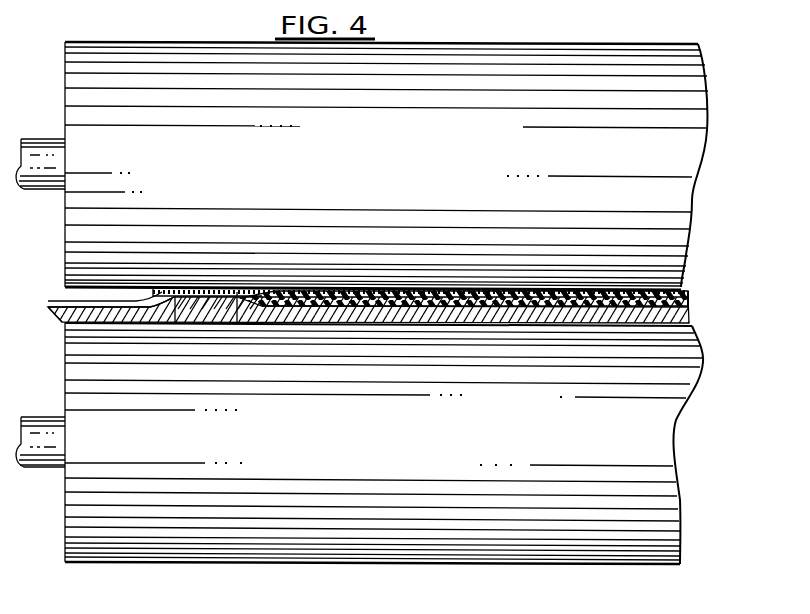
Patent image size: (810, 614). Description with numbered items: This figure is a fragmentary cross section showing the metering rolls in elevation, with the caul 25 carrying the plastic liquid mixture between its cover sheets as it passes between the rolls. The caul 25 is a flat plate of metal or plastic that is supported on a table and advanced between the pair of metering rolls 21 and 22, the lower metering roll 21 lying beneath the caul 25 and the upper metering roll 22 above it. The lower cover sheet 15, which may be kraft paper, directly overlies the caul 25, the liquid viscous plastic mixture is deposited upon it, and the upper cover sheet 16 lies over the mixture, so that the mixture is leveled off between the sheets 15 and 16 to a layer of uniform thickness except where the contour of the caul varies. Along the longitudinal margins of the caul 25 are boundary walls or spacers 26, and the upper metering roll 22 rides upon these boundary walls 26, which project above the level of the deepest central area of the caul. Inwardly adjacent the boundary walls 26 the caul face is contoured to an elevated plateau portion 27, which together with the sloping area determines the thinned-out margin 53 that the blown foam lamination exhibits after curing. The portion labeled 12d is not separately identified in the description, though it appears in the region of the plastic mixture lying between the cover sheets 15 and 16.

The metering roll 22 is at (110, 53).
The metering roll 21 is at (146, 543).
The caul 25 is at (688, 318).
The boundary walls 26 is at (54, 311).
The lower cover sheet 15 is at (50, 301).
The upper cover sheet 16 is at (178, 292).
The elevated plateau portion 27 is at (243, 296).
The thinned-out margin 53 is at (342, 296).
The edge portion 12d is at (692, 298).